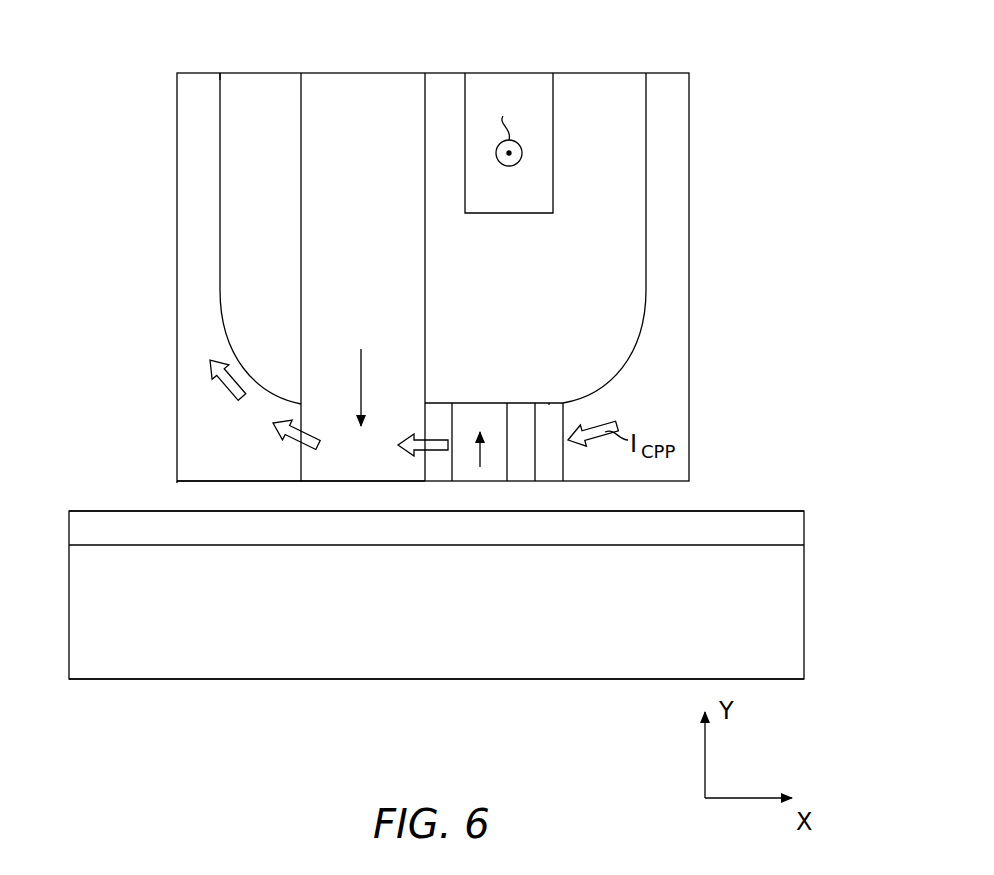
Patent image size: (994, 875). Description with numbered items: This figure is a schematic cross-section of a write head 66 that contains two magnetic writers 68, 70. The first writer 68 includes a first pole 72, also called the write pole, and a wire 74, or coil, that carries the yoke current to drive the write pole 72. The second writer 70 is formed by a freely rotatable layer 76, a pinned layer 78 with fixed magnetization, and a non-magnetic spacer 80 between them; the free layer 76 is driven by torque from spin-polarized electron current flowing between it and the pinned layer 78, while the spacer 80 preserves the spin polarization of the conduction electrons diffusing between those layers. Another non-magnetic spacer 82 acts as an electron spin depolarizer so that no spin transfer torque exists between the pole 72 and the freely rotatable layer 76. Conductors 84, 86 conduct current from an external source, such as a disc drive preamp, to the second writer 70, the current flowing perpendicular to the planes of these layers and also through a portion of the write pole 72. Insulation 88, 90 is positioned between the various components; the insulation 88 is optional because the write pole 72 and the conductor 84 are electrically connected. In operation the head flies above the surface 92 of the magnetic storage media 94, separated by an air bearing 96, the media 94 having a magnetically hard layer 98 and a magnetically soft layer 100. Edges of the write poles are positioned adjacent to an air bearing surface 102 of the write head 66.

The write head 66 is at (727, 127).
The magnetic writer 68 is at (370, 488).
The second writer 70 is at (452, 483).
The first pole 72 is at (350, 85).
The wire 74 is at (520, 80).
The freely rotatable layer 76 is at (484, 410).
The pinned layer 78 is at (547, 410).
The non-magnetic spacer 80 is at (520, 410).
The non-magnetic spacer 82 is at (438, 410).
The conductor 84 is at (185, 148).
The conductor 86 is at (680, 213).
The insulation 88 is at (253, 85).
The insulation 90 is at (594, 80).
The surface 92 is at (750, 510).
The magnetic storage media 94 is at (115, 695).
The air bearing 96 is at (182, 498).
The magnetically hard layer 98 is at (69, 532).
The magnetically soft layer 100 is at (80, 640).
The air bearing surface 102 is at (325, 483).